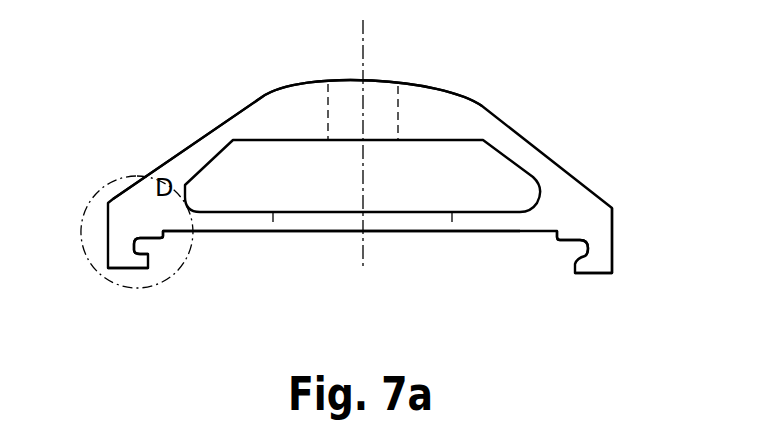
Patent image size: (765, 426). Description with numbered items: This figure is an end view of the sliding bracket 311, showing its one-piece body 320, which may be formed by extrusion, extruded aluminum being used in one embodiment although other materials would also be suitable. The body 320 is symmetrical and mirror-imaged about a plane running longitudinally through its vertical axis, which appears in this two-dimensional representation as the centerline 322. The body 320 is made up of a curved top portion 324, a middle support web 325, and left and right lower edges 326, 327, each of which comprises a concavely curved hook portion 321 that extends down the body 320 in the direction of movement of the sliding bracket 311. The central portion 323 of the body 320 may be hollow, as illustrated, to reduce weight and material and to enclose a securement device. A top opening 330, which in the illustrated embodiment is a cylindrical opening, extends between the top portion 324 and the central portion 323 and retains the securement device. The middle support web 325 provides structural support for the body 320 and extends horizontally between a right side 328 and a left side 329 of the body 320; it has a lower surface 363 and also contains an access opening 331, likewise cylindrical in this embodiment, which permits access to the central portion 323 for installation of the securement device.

The sliding bracket 311 is at (524, 94).
The body 320 is at (170, 156).
The concavely curved hook portion 321 is at (152, 256).
The centerline 322 is at (366, 34).
The central portion 323 is at (362, 176).
The curved top portion 324 is at (270, 88).
The middle support web 325 is at (443, 222).
The left lower edge 326 is at (128, 270).
The right lower edge 327 is at (590, 277).
The right side 328 is at (108, 208).
The left side 329 is at (613, 215).
The top opening 330 is at (347, 95).
The access opening 331 is at (292, 222).
The lower surface 363 is at (202, 231).